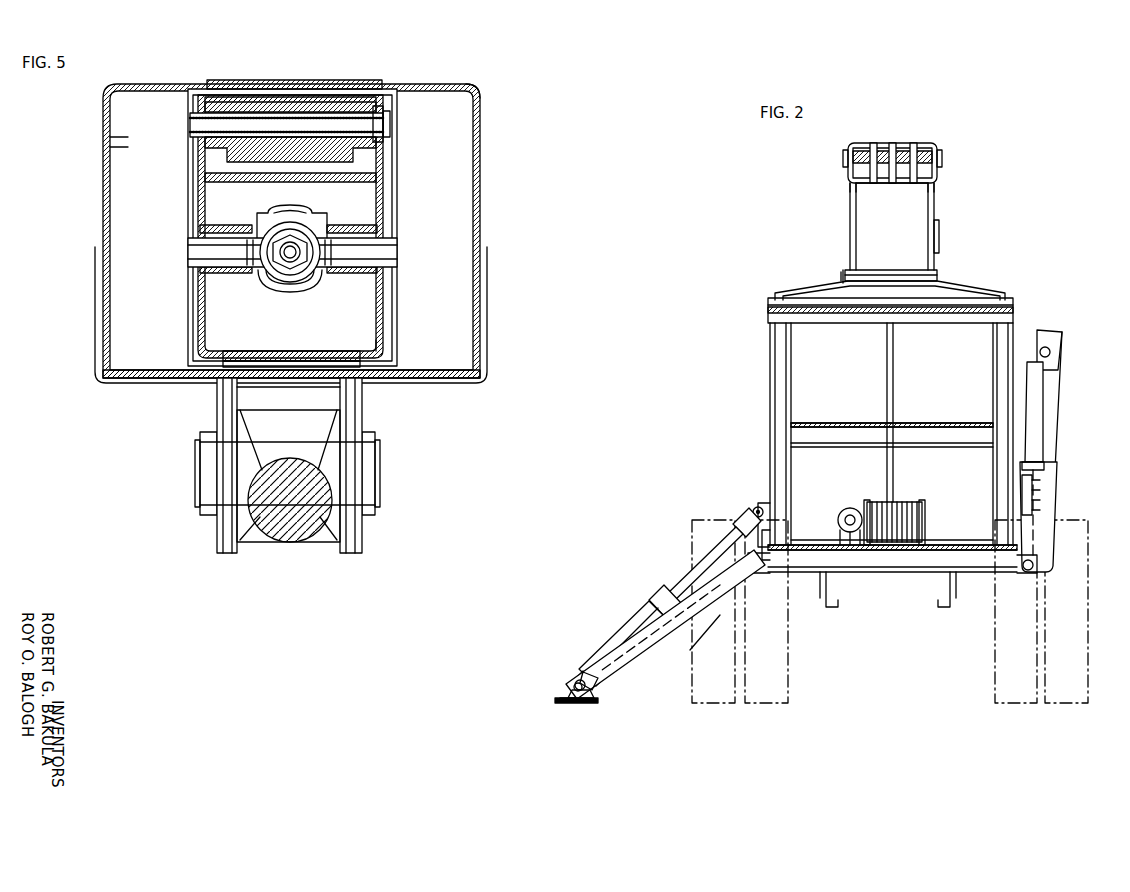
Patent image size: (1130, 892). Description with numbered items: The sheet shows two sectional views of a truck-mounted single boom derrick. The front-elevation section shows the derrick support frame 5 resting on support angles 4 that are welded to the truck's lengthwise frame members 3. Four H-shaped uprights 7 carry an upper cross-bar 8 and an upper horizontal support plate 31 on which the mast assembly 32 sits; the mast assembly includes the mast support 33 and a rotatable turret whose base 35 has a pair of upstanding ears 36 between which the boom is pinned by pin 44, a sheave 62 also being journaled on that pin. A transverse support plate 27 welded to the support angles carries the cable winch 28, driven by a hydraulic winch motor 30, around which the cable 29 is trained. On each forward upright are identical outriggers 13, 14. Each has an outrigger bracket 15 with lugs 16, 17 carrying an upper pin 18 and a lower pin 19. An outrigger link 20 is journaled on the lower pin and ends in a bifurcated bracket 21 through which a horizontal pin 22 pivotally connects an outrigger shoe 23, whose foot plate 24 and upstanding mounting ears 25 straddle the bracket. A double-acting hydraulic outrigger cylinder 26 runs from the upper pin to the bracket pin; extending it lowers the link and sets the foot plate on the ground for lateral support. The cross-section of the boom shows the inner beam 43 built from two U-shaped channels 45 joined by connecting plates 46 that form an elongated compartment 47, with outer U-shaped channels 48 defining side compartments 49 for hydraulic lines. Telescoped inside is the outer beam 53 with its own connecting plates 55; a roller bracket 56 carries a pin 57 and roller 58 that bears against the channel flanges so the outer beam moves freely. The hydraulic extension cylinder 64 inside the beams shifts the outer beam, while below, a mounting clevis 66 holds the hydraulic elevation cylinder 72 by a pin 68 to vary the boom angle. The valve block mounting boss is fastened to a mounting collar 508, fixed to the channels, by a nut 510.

In FIG. 2, the frame members 3 is at (836, 612).
In FIG. 2, the support angles 4 is at (821, 600).
In FIG. 2, the derrick support frame 5 is at (740, 416).
In FIG. 2, the uprights 7 is at (788, 384).
In FIG. 2, the upper cross-bar 8 is at (768, 322).
In FIG. 2, the outrigger 13 is at (656, 598).
In FIG. 2, the outrigger 14 is at (1075, 447).
In FIG. 2, the outrigger bracket 15 is at (772, 540).
In FIG. 2, the lugs 16 is at (757, 506).
In FIG. 2, the lugs 17 is at (756, 578).
In FIG. 2, the upper pin 18 is at (750, 510).
In FIG. 2, the lower pin 19 is at (740, 592).
In FIG. 2, the outrigger link 20 is at (668, 645).
In FIG. 2, the bifurcated bracket 21 is at (575, 685).
In FIG. 2, the horizontal pin 22 is at (590, 694).
In FIG. 2, the outrigger shoe 23 is at (566, 718).
In FIG. 2, the foot plate 24 is at (583, 704).
In FIG. 2, the mounting ears 25 is at (565, 696).
In FIG. 2, the hydraulic outrigger cylinder 26 is at (625, 637).
In FIG. 2, the support plate 27 is at (952, 545).
In FIG. 2, the cable winch 28 is at (912, 502).
In FIG. 2, the cable 29 is at (894, 396).
In FIG. 2, the hydraulic winch motor 30 is at (850, 508).
In FIG. 2, the upper horizontal support plate 31 is at (1006, 292).
In FIG. 2, the mast assembly 32 is at (968, 211).
In FIG. 2, the mast support 33 is at (940, 279).
In FIG. 2, the base 35 is at (843, 275).
In FIG. 2, the upstanding ears 36 is at (850, 181).
In FIG. 5, the inner beam 43 is at (483, 102).
In FIG. 2, the pin 44 is at (938, 158).
In FIG. 5, the U-shaped channels 45 is at (190, 187).
In FIG. 5, the connecting plates 46 is at (300, 80).
In FIG. 5, the elongated compartment 47 is at (383, 353).
In FIG. 5, the U-shaped channels 48 is at (100, 198).
In FIG. 5, the side compartments 49 is at (128, 140).
In FIG. 5, the outer beam 53 is at (198, 292).
In FIG. 5, the connecting plates 55 is at (295, 358).
In FIG. 5, the roller bracket 56 is at (385, 160).
In FIG. 5, the pin 57 is at (213, 122).
In FIG. 5, the roller 58 is at (355, 80).
In FIG. 2, the sheave 62 is at (892, 145).
In FIG. 5, the hydraulic extension cylinder 64 is at (293, 208).
In FIG. 5, the mounting clevis 66 is at (480, 385).
In FIG. 5, the pin 68 is at (376, 470).
In FIG. 5, the hydraulic elevation cylinder 72 is at (273, 542).
In FIG. 5, the mounting collar 508 is at (268, 268).
In FIG. 5, the nut 510 is at (310, 268).